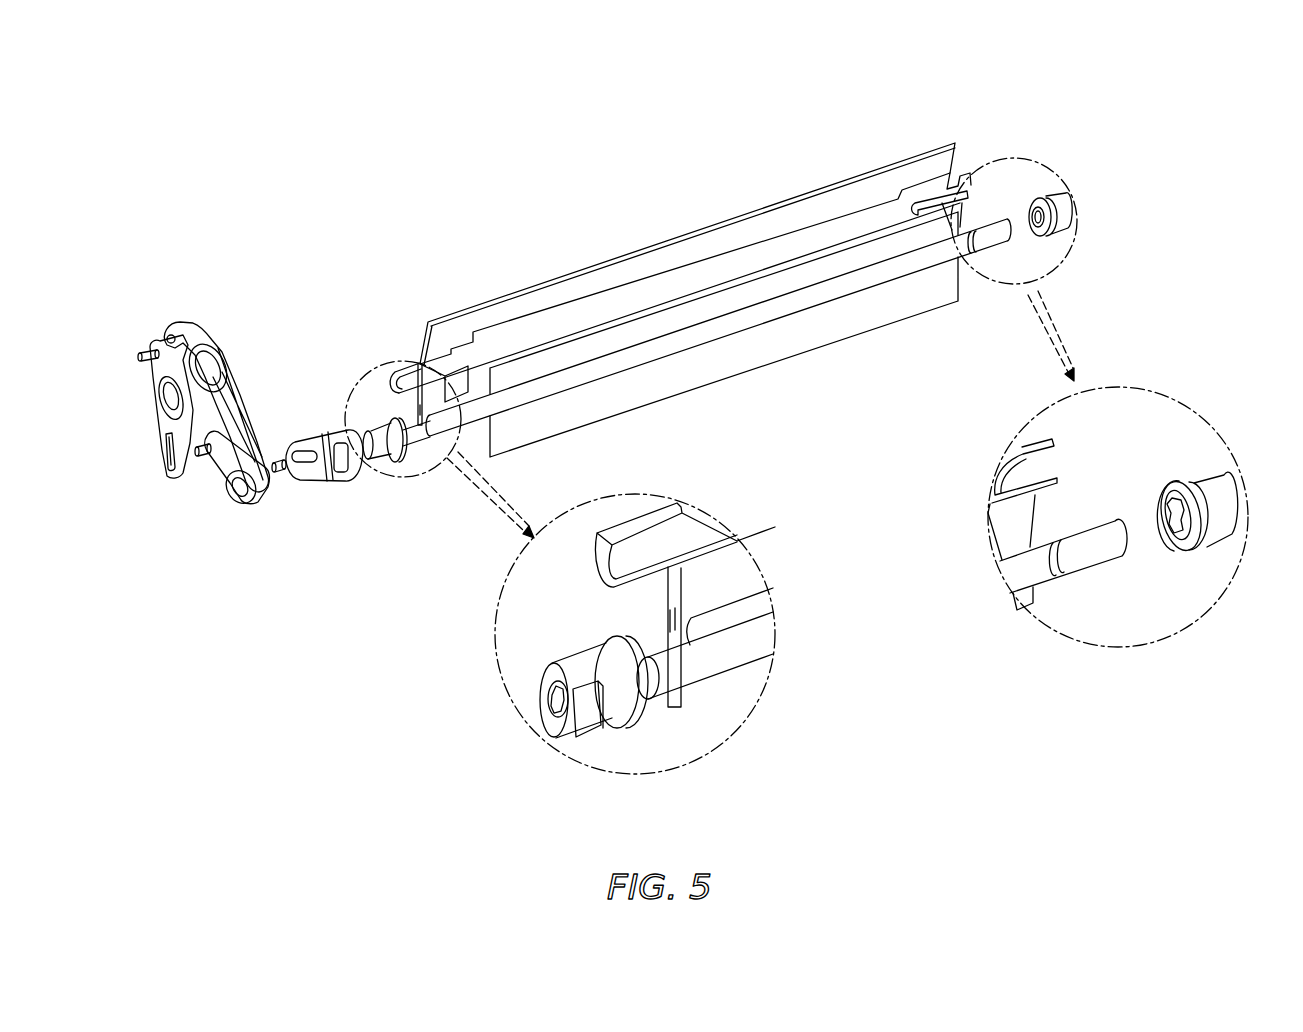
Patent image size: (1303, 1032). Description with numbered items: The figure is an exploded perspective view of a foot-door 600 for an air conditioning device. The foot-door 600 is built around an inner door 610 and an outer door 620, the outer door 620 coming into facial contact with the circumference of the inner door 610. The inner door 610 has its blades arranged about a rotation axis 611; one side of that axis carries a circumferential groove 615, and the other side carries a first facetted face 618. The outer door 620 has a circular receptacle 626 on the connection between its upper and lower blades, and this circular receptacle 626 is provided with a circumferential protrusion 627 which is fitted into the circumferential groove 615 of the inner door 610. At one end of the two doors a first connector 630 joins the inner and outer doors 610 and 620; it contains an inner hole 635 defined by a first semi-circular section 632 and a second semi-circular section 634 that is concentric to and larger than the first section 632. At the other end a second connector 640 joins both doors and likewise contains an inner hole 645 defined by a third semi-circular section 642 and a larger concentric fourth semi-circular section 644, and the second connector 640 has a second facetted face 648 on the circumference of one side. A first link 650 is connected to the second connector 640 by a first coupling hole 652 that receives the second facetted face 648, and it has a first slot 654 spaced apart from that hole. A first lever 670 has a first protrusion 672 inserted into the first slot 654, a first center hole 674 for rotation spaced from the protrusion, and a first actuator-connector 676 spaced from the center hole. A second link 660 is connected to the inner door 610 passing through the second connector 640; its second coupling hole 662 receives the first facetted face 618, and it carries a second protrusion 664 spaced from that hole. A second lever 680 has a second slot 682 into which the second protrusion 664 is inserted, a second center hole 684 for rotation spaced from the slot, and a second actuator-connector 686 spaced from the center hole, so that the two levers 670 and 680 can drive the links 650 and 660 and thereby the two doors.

The foot-door 600 is at (369, 259).
The inner door 610 is at (805, 328).
The rotation axis 611 is at (915, 265).
The circumferential groove 615 is at (1068, 578).
The first facetted face 618 is at (428, 453).
The outer door 620 is at (690, 245).
The circular receptacle 626 is at (627, 517).
The circumferential protrusion 627 is at (997, 480).
The first connector 630 is at (1040, 200).
The first semi-circular section 632 is at (1175, 545).
The second semi-circular section 634 is at (1165, 525).
The inner hole 635 is at (1036, 218).
The second connector 640 is at (377, 420).
The third semi-circular section 642 is at (548, 725).
The fourth semi-circular section 644 is at (547, 717).
The inner hole 645 is at (550, 700).
The second facetted face 648 is at (383, 463).
The first link 650 is at (332, 479).
The first coupling hole 652 is at (352, 494).
The first slot 654 is at (293, 443).
The second link 660 is at (222, 476).
The second coupling hole 662 is at (228, 508).
The second protrusion 664 is at (203, 460).
The first lever 670 is at (234, 383).
The first protrusion 672 is at (280, 471).
The first center hole 674 is at (215, 352).
The first actuator-connector 676 is at (170, 330).
The second lever 680 is at (153, 373).
The second slot 682 is at (162, 461).
The second center hole 684 is at (164, 399).
The second actuator-connector 686 is at (140, 353).